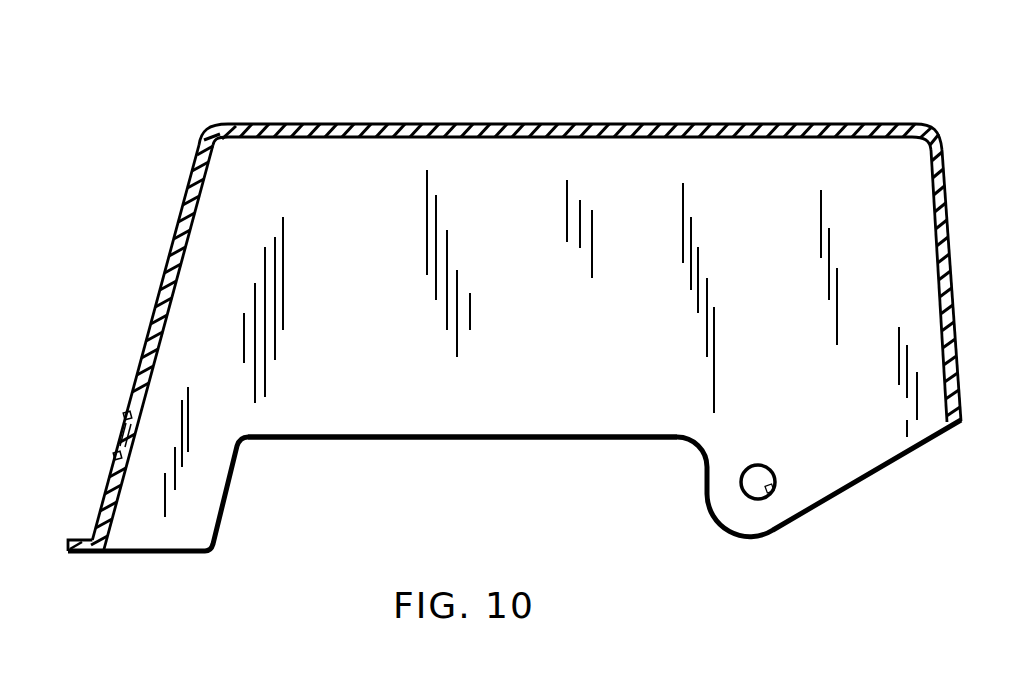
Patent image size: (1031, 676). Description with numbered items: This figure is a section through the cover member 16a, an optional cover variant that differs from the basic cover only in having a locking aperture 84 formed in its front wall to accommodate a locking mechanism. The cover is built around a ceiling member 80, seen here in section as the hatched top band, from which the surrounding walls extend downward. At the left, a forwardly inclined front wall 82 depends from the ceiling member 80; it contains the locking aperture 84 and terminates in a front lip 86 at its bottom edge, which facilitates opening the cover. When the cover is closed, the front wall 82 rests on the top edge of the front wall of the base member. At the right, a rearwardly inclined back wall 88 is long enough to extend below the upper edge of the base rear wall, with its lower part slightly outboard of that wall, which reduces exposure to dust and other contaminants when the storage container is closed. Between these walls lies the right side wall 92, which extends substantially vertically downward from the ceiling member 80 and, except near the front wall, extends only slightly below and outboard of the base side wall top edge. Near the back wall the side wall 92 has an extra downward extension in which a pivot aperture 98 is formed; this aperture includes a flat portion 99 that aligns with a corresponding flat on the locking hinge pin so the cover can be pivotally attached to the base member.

The cover member 16a is at (658, 92).
The ceiling member 80 is at (525, 95).
The front wall 82 is at (160, 292).
The locking aperture 84 is at (118, 440).
The front lip 86 is at (78, 540).
The back wall 88 is at (968, 286).
The right side wall 92 is at (364, 440).
The pivot aperture 98 is at (750, 482).
The flat portion 99 is at (778, 490).